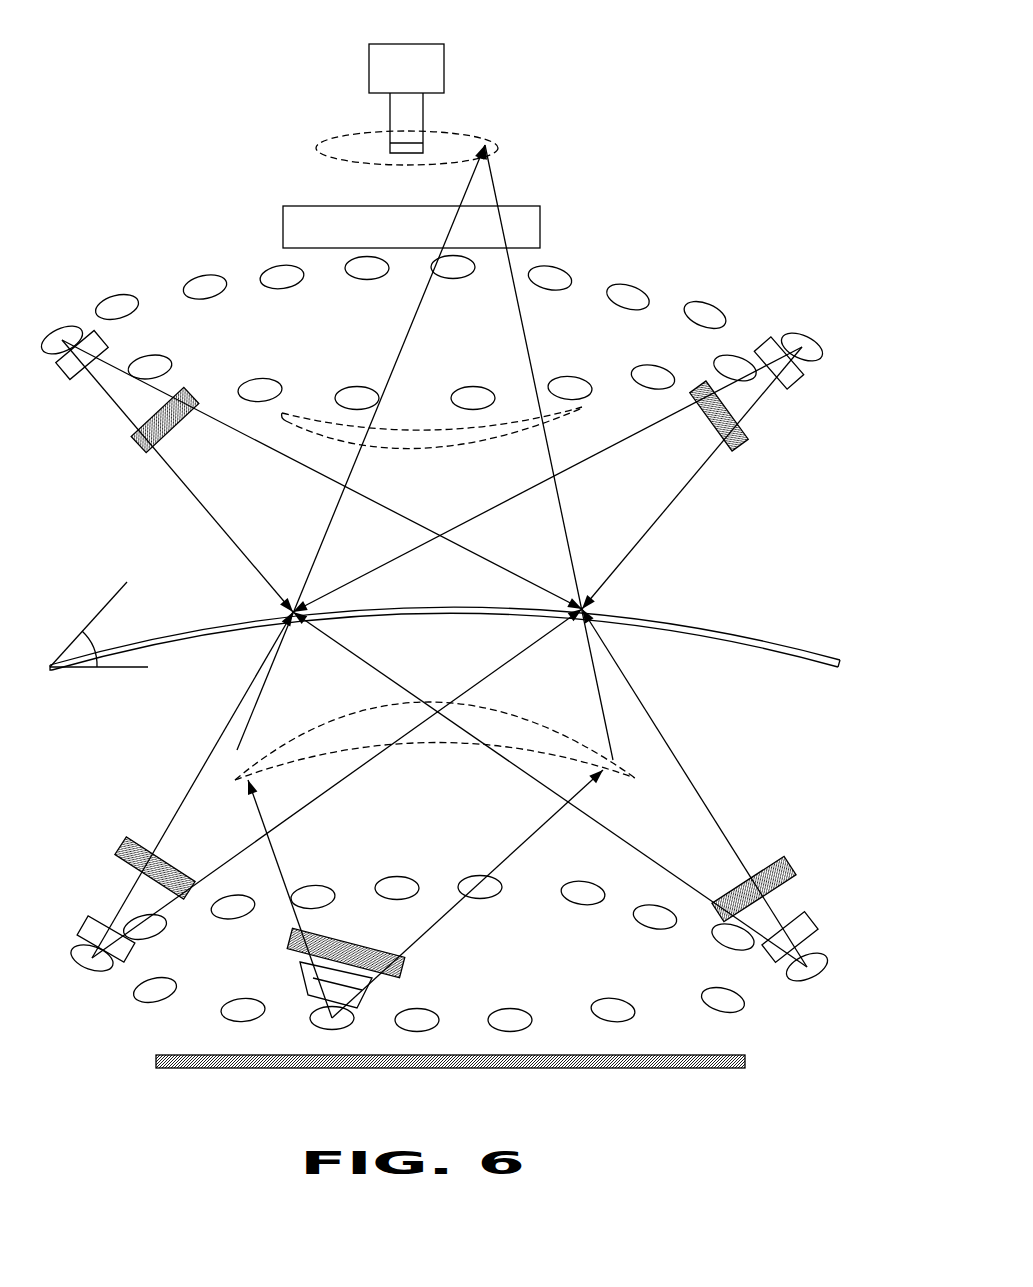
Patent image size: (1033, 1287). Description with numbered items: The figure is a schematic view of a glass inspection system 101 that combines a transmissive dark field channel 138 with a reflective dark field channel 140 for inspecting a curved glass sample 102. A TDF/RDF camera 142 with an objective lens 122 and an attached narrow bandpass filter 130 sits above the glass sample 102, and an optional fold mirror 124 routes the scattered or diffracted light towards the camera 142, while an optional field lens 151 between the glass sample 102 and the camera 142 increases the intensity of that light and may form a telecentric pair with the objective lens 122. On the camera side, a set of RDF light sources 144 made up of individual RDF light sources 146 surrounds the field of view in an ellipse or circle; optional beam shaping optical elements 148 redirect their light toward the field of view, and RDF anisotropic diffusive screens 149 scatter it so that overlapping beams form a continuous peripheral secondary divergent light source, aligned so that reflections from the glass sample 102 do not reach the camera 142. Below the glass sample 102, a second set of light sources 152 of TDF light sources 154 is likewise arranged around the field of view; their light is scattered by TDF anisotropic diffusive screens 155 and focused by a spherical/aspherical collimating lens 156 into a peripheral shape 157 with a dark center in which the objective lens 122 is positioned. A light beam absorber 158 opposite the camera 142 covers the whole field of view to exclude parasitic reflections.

The glass inspection system 101 is at (663, 135).
The glass sample 102 is at (777, 632).
The objective lens 122 is at (423, 113).
The fold mirror 124 is at (540, 225).
The narrow bandpass filter 130 is at (390, 150).
The transmissive dark field channel 138 is at (125, 1110).
The reflective dark field channel 140 is at (735, 268).
The TDF/RDF camera 142 is at (444, 63).
The set of RDF light sources 144 is at (672, 252).
The RDF light source 146 is at (106, 298).
The beam shaping optical element 148 is at (67, 378).
The RDF anisotropic diffusive screen 149 is at (742, 448).
The field lens 151 is at (418, 428).
The second set of light sources 152 is at (512, 903).
The TDF light source 154 is at (150, 1000).
The TDF anisotropic diffusive screen 155 is at (115, 850).
The spherical/aspherical collimating lens 156 is at (432, 745).
The peripheral shape 157 is at (497, 145).
The light beam absorber 158 is at (233, 1070).